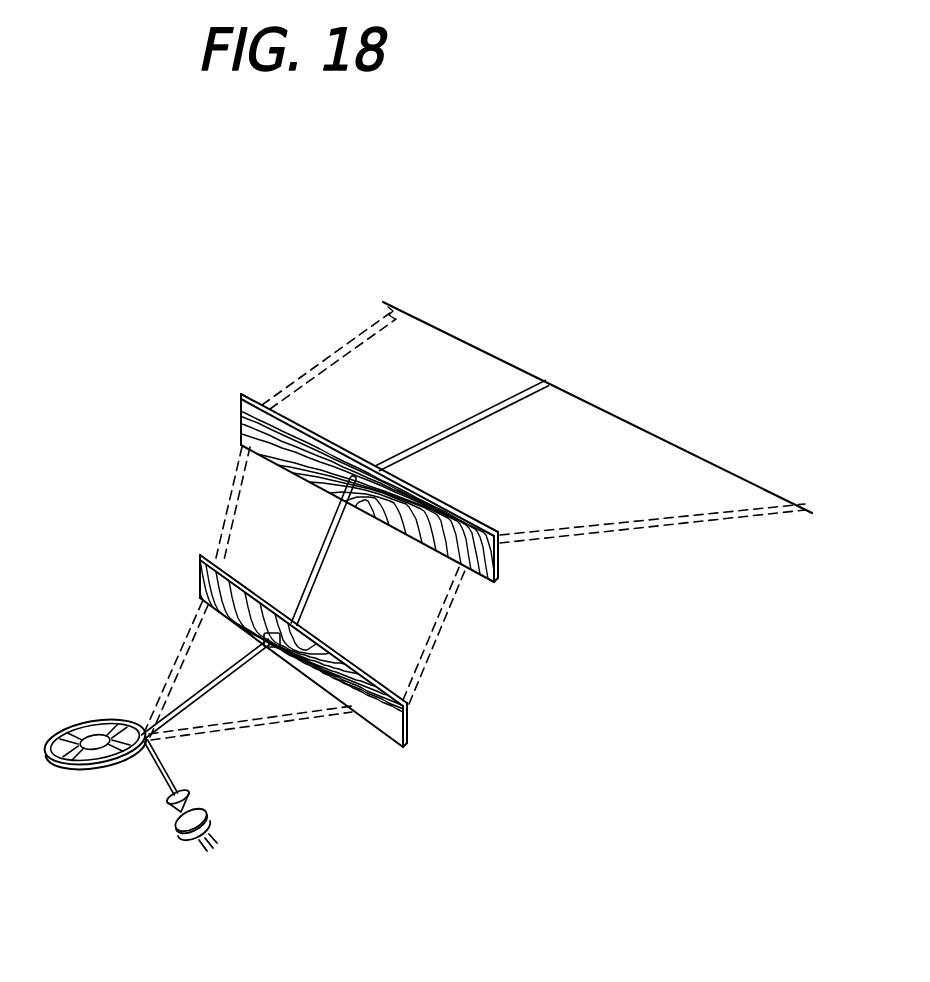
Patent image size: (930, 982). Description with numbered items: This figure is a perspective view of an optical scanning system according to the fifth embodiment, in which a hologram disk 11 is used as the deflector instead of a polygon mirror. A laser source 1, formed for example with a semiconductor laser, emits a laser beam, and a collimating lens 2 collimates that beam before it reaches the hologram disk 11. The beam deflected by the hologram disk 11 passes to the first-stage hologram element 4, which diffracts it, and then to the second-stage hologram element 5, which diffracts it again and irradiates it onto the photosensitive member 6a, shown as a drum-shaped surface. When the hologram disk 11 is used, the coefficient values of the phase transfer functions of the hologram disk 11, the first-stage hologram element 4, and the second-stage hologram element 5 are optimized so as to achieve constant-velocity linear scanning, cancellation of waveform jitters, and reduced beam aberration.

The laser source 1 is at (215, 815).
The collimating lens 2 is at (190, 793).
The first-stage hologram element 4 is at (410, 718).
The second-stage hologram element 5 is at (500, 557).
The photosensitive member 6a is at (604, 407).
The hologram disk 11 is at (91, 725).